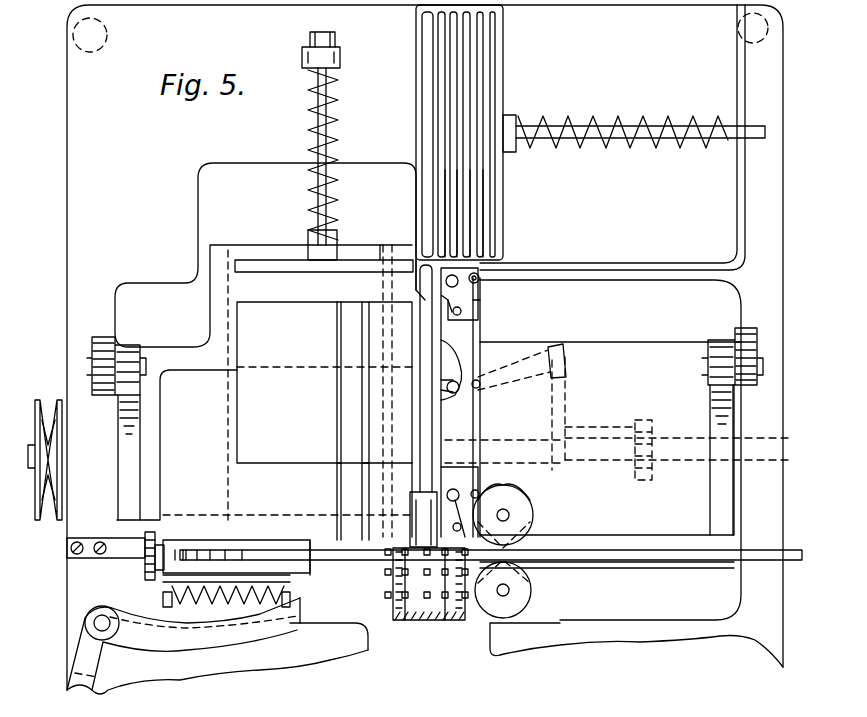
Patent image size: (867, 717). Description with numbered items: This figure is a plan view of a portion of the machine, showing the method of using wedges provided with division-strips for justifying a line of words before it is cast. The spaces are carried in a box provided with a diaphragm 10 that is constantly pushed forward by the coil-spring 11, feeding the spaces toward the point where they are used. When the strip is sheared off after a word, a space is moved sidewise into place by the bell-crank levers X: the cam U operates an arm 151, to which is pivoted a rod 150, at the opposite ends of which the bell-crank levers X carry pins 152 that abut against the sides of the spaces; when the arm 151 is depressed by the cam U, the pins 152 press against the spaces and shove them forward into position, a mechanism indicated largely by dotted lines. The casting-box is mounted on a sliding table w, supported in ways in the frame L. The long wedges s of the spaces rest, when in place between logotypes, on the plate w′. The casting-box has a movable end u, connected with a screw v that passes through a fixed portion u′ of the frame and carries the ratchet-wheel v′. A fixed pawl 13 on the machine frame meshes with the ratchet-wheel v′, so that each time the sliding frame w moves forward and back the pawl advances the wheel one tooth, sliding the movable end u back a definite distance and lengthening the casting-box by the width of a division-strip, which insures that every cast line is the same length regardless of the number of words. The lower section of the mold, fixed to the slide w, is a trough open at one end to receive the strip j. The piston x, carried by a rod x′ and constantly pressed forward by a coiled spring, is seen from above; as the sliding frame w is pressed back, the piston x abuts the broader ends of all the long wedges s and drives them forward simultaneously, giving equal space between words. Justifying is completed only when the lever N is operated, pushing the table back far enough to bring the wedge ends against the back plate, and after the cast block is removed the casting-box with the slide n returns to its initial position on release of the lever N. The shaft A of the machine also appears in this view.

The rod x′ is at (318, 172).
The piston x is at (324, 277).
The diaphragm 10 is at (503, 197).
The coil-spring 11 is at (634, 144).
The wedges s is at (354, 421).
The bell-crank levers X is at (467, 300).
The pins 152 is at (448, 316).
The arm 151 is at (468, 395).
The rod 150 is at (480, 432).
The frame L is at (648, 355).
The sliding table w is at (466, 380).
The plate w′ is at (300, 413).
The cam U is at (515, 410).
The screw v is at (565, 362).
The rack k′ is at (652, 428).
The shaft G is at (677, 447).
The fixed pawl 13 is at (118, 550).
The ratchet-wheel v′ is at (146, 542).
The movable end u is at (240, 553).
The fixed portion of the frame u′ is at (200, 553).
The slide n is at (312, 560).
The strip j is at (317, 553).
The lever N is at (183, 653).
The shaft A is at (426, 599).